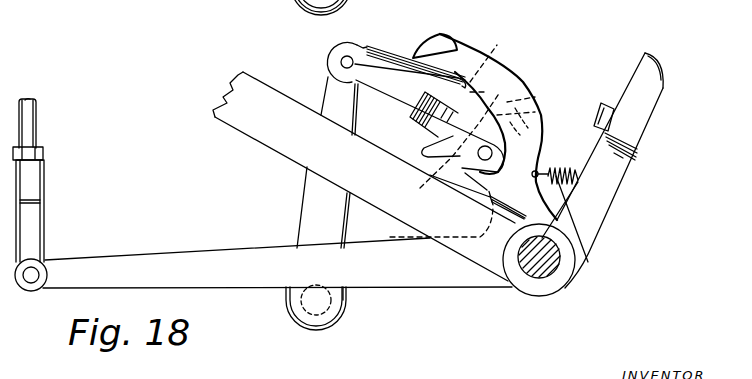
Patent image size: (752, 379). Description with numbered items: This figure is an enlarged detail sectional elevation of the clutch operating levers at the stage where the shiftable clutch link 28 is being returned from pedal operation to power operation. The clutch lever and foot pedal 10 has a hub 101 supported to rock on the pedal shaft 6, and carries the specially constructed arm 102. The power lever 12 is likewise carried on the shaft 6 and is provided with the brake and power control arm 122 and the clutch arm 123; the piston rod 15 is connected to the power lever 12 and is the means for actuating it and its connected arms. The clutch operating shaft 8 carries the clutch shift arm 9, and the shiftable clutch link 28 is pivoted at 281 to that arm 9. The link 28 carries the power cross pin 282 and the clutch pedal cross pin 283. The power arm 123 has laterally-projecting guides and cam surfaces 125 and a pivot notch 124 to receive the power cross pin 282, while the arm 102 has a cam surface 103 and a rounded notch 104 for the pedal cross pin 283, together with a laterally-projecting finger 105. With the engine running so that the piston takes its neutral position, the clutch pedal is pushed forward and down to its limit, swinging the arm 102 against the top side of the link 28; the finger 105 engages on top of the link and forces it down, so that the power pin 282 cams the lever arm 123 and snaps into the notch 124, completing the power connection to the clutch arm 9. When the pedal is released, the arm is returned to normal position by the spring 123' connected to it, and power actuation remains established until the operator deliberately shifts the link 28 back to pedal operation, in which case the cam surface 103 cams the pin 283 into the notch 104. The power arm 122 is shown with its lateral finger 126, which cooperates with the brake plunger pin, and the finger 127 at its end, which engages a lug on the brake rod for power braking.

The pedal shaft 6 is at (545, 274).
The clutch operating shaft 8 is at (340, 310).
The clutch shift arm 9 is at (310, 218).
The clutch lever and foot pedal 10 is at (236, 121).
The power lever 12 is at (182, 270).
The piston rod 15 is at (30, 125).
The shiftable clutch link 28 is at (397, 72).
The hub 101 is at (527, 284).
The arm 102 is at (470, 65).
The cam surface 103 is at (537, 190).
The rounded notch 104 is at (547, 151).
The laterally-projecting finger 105 is at (443, 33).
The brake and power control arm 122 is at (617, 183).
The clutch arm 123 is at (549, 122).
The spring 123' is at (598, 219).
The pivot notch 124 is at (432, 178).
The laterally-projecting guides and cam surfaces 125 is at (531, 88).
The lateral finger 126 is at (607, 97).
The finger 127 is at (648, 82).
The pivot 281 is at (349, 57).
The power cross pin 282 is at (485, 92).
The clutch pedal cross pin 283 is at (462, 172).